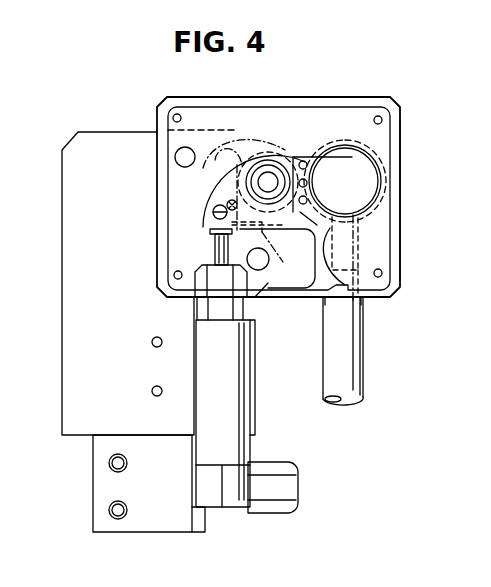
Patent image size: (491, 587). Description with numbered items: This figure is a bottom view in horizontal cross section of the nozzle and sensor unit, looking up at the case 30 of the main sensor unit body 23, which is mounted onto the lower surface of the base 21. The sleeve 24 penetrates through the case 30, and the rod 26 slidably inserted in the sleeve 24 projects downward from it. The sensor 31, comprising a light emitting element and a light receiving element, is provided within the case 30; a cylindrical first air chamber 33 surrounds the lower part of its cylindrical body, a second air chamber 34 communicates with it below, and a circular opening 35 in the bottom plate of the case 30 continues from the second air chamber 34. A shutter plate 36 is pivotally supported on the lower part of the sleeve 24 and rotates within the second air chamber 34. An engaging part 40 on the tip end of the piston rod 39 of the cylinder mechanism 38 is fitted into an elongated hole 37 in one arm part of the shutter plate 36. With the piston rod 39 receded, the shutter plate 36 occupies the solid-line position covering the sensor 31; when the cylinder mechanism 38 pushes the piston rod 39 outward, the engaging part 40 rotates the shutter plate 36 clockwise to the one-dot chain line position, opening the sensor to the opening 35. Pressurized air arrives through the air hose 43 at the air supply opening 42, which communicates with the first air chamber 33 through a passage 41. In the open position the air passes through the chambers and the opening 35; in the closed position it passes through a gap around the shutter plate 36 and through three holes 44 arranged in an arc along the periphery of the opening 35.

The base 21 is at (62, 388).
The main sensor unit body 23 is at (404, 163).
The sleeve 24 is at (281, 168).
The rod 26 is at (268, 182).
The case 30 is at (162, 112).
The sensor 31 is at (357, 146).
The first air chamber 33 is at (374, 181).
The second air chamber 34 is at (388, 192).
The circular opening 35 is at (338, 145).
The shutter plate 36 is at (310, 155).
The elongated hole 37 is at (229, 203).
The cylinder mechanism 38 is at (243, 360).
The piston rod 39 is at (216, 250).
The engaging part 40 is at (213, 212).
The passage 41 is at (332, 259).
The air supply opening 42 is at (345, 297).
The air hose 43 is at (363, 345).
The holes 44 is at (307, 199).